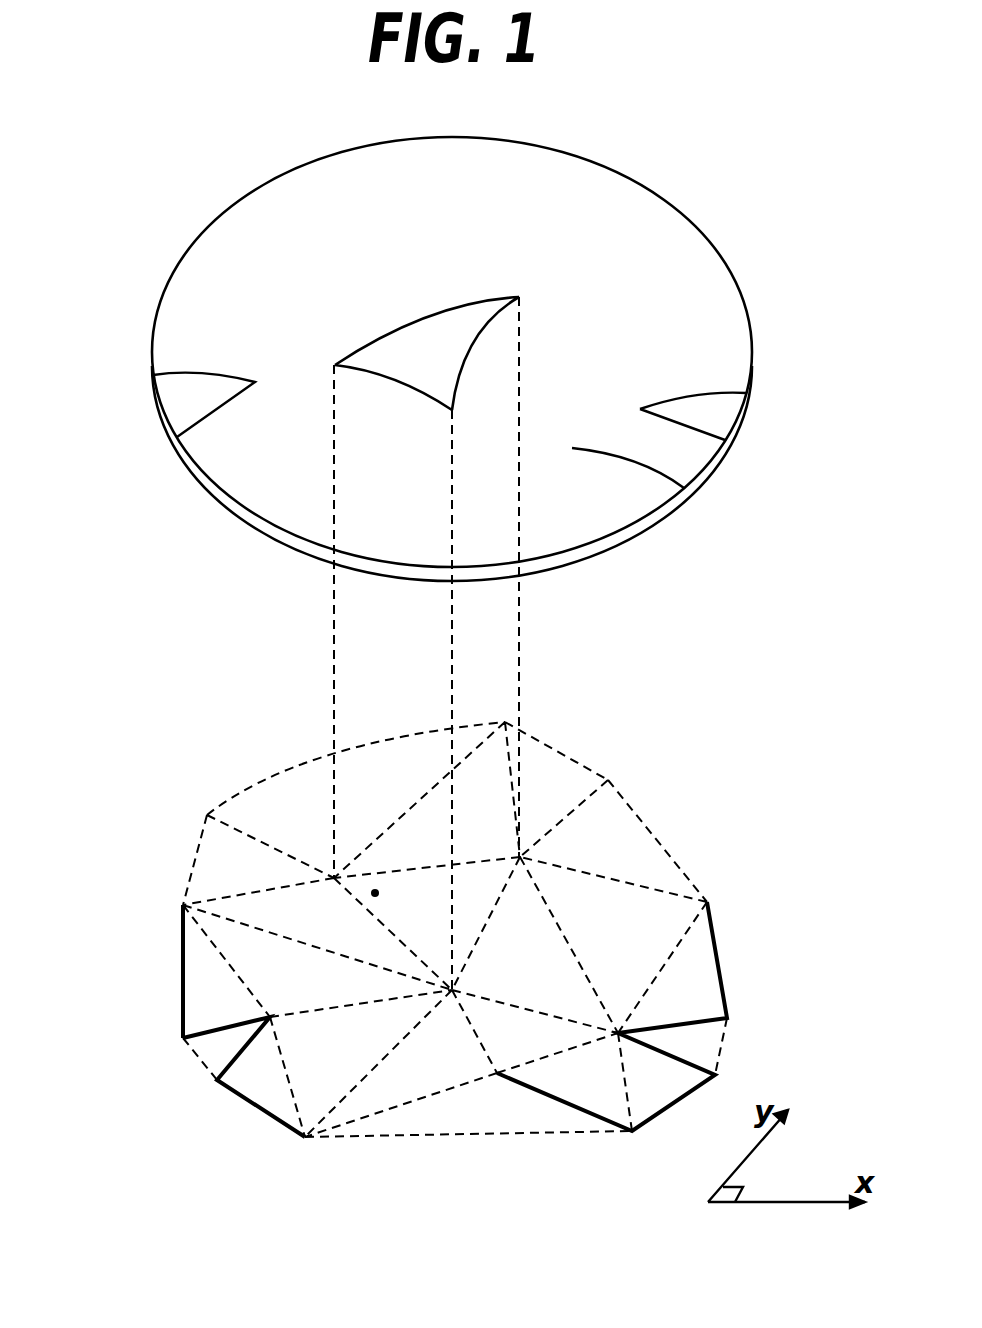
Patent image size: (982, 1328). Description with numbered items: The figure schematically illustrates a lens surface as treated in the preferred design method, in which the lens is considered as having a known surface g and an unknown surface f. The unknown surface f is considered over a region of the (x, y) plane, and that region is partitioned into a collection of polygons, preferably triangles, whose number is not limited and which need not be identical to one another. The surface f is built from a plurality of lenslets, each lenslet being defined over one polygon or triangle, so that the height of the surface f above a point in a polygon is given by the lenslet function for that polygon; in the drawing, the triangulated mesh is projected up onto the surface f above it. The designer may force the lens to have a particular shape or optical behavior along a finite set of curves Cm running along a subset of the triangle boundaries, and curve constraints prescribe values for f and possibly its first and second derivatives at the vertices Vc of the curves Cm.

The unknown lens surface f is at (613, 210).
The lens surface g is at (653, 530).
The curves Cm is at (812, 972).
The vertices Vc is at (305, 1137).